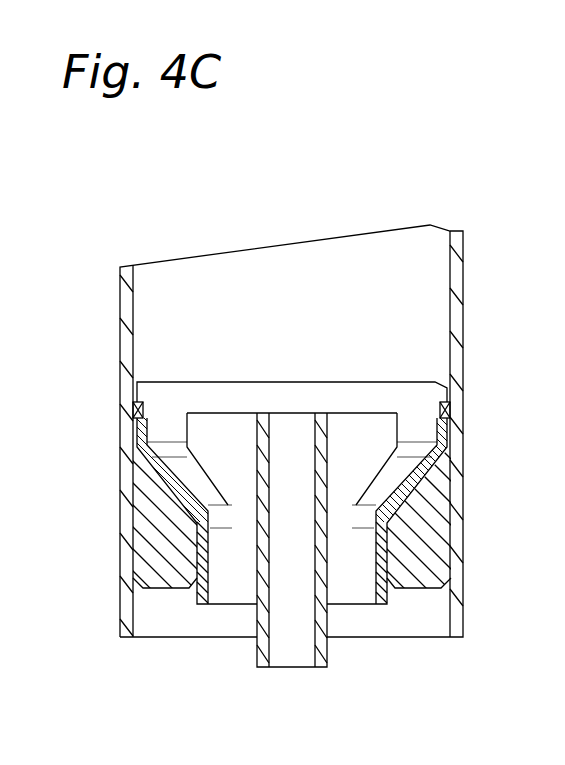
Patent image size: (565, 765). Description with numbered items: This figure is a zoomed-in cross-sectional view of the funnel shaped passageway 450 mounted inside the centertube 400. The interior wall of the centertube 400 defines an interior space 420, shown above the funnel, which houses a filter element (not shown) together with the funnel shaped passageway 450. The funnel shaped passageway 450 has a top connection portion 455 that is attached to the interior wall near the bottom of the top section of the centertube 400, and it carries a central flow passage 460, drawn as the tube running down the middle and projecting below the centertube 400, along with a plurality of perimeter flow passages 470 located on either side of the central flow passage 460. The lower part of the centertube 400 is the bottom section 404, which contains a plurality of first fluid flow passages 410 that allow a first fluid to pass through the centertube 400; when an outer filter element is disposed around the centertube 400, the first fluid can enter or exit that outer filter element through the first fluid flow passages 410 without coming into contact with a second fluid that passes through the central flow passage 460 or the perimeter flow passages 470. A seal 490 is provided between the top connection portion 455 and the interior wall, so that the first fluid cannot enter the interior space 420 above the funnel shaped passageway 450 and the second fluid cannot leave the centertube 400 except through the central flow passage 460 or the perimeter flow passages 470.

The centertube 400 is at (463, 268).
The bottom section 404 is at (108, 505).
The first fluid flow passages 410 is at (175, 578).
The interior space 420 is at (172, 287).
The funnel shaped passageway 450 is at (432, 497).
The top connection portion 455 is at (138, 402).
The central flow passage 460 is at (287, 648).
The perimeter flow passages 470 is at (223, 588).
The seal 490 is at (448, 405).